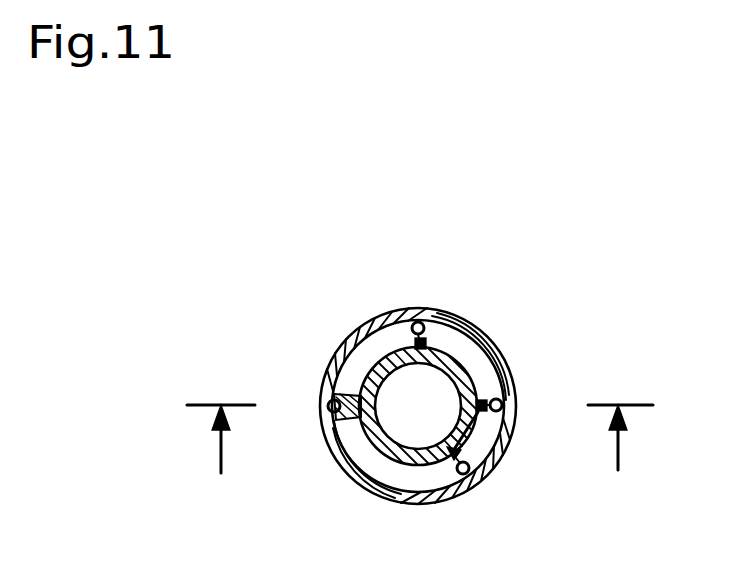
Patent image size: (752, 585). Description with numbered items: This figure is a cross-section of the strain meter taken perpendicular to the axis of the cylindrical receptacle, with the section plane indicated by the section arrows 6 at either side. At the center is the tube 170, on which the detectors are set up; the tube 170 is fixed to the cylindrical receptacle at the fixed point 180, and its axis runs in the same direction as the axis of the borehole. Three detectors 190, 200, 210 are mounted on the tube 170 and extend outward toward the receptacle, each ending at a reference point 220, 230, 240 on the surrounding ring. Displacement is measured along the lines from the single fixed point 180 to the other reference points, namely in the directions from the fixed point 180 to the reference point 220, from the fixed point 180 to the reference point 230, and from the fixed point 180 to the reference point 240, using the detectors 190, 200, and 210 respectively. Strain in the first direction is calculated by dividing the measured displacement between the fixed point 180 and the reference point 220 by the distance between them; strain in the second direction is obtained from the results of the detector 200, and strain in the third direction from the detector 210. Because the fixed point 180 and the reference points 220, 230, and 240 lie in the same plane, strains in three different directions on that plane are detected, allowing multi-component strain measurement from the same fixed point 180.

The section line 6- 6 is at (420, 453).
The tube 170 is at (378, 432).
The fixed point 180 is at (330, 402).
The detector 190 is at (418, 340).
The detector 200 is at (486, 409).
The detector 210 is at (452, 458).
The reference point 220 is at (423, 324).
The reference point 230 is at (502, 402).
The reference point 240 is at (468, 471).